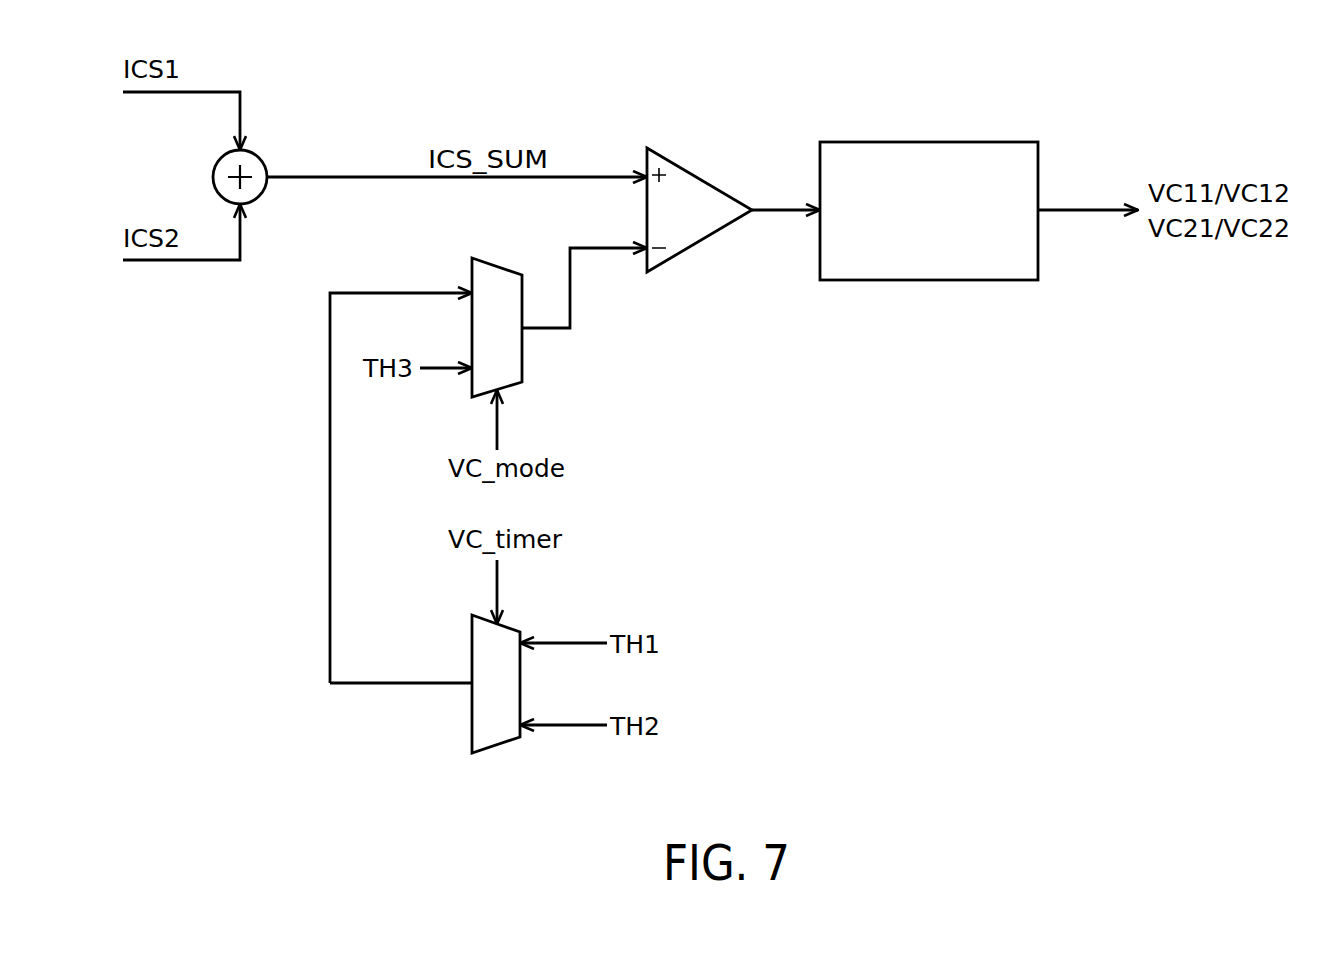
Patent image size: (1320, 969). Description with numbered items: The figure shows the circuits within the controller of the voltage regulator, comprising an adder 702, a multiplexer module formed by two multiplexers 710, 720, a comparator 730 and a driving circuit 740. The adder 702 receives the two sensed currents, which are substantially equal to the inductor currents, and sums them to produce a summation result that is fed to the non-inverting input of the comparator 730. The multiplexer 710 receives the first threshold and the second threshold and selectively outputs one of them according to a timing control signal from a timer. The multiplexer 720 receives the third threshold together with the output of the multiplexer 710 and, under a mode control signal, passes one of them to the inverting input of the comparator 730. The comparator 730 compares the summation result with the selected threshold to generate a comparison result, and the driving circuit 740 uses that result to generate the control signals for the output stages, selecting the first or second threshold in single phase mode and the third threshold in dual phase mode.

The adder 702 is at (258, 156).
The multiplexer 710 is at (511, 627).
The multiplexer 720 is at (490, 262).
The comparator 730 is at (686, 168).
The driving circuit 740 is at (1007, 142).